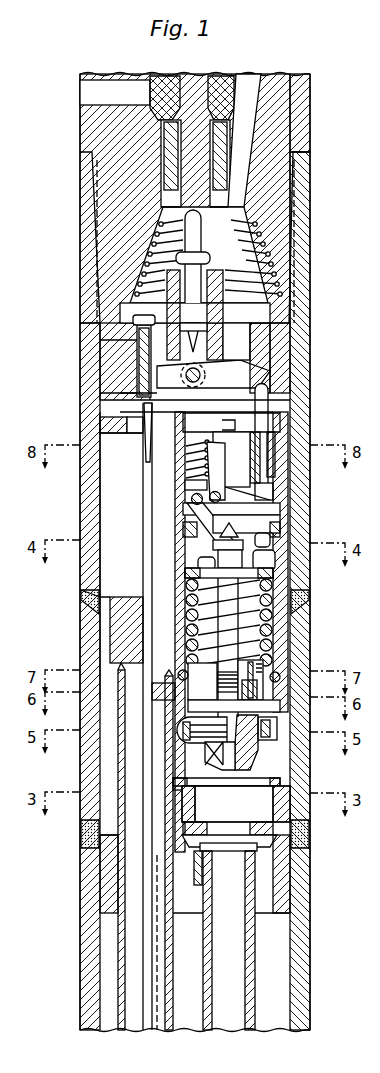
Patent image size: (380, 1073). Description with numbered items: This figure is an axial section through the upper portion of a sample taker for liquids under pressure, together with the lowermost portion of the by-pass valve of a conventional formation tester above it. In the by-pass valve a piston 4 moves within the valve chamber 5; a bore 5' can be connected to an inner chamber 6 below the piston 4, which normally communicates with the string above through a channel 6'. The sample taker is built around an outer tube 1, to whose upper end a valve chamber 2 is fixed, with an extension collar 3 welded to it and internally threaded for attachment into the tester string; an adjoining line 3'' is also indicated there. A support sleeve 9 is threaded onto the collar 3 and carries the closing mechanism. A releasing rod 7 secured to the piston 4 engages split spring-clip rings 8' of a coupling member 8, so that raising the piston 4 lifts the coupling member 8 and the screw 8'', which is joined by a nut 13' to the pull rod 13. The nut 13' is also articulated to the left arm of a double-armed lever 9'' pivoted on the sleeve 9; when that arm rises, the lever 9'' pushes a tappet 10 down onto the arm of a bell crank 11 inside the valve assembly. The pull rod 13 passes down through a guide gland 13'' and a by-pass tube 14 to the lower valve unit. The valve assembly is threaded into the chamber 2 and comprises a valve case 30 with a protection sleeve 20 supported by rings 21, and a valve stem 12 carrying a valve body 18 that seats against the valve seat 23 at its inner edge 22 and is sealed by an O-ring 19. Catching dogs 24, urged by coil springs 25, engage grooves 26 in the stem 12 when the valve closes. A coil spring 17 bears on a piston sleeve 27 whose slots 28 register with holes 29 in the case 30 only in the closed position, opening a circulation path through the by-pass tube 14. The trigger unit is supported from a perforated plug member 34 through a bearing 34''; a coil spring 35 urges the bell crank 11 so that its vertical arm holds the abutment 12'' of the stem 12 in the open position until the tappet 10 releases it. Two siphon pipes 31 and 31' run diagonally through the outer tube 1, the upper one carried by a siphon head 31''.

The outer tube 1 is at (296, 974).
The valve chamber 2 is at (300, 812).
The extension collar 3 is at (208, 237).
The body parting line 3'' is at (220, 241).
The piston 4 is at (224, 143).
The chamber of the by-pass valve 5 is at (181, 237).
The bore 5' is at (100, 92).
The inner chamber 6 is at (166, 285).
The channel 6' is at (284, 140).
The releasing rod 7 is at (200, 280).
The coupling member 8 is at (279, 335).
The split spring-clip rings 8' is at (285, 344).
The screw 8'' is at (103, 356).
The support sleeve 9 is at (160, 366).
The double-armed lever 9'' is at (261, 350).
The trigger pin or tappet 10 is at (264, 415).
The bell crank 11 is at (255, 500).
The valve stem 12 is at (262, 646).
The abutment 12'' is at (260, 554).
The pull rod 13 is at (159, 716).
The nut 13' is at (99, 425).
The guide gland 13'' is at (95, 420).
The by-pass tube 14 is at (117, 980).
The coil spring 17 is at (300, 606).
The valve body 18 is at (256, 757).
The O-ring 19 is at (186, 740).
The protection sleeve 20 is at (188, 737).
The rings 21 is at (258, 742).
The inner edge 22 is at (270, 723).
The valve seat 23 is at (180, 704).
The catching dogs 24 is at (262, 688).
The coil spring 25 is at (268, 700).
The grooves 26 is at (219, 682).
The piston sleeve 27 is at (273, 530).
The slots 28 is at (190, 567).
The holes 29 is at (178, 557).
The valve case 30 is at (178, 583).
The siphon pipe 31 is at (162, 932).
The siphon pipe 31' is at (150, 940).
The siphon head 31'' is at (228, 810).
The plug member 34 is at (231, 473).
The bearing 34'' is at (230, 471).
The coil spring 35 is at (186, 461).